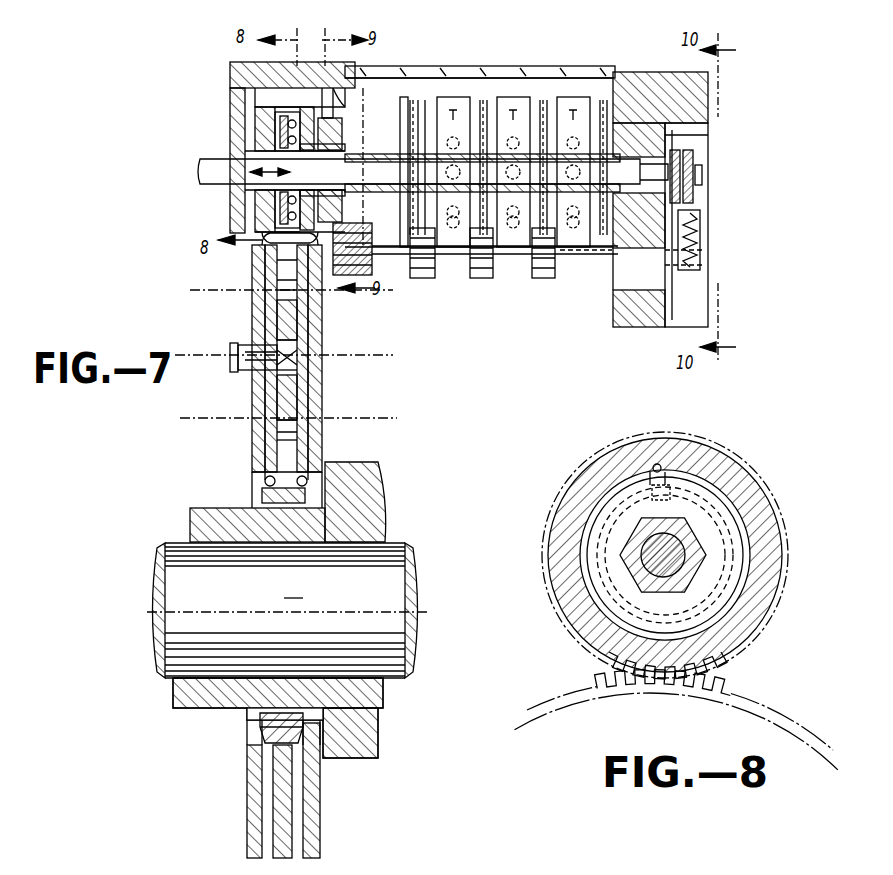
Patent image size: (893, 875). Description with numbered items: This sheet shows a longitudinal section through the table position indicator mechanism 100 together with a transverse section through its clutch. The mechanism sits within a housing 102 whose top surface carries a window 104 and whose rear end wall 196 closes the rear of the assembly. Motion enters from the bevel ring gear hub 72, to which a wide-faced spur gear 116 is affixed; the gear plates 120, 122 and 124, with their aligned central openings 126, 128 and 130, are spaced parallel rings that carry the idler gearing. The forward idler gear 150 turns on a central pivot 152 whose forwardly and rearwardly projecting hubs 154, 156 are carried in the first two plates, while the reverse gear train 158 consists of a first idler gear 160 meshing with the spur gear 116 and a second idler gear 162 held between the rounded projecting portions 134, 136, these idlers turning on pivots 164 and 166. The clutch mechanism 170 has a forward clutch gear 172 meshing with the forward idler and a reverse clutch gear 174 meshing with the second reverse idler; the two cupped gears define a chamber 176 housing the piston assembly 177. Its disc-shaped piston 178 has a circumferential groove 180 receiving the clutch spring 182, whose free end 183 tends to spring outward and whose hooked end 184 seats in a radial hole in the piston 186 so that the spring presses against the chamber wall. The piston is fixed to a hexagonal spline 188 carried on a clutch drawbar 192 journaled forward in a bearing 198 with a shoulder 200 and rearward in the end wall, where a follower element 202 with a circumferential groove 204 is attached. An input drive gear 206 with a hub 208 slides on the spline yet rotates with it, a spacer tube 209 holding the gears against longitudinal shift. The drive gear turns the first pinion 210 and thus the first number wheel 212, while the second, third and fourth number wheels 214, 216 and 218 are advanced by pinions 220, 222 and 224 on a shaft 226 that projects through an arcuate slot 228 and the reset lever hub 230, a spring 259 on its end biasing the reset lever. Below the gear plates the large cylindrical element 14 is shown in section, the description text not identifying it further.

In FIG. 7, the roller 14 is at (285, 610).
In FIG. 7, the bevel ring gear hub 72 is at (355, 462).
In FIG. 7, the table position indicator mechanism 100 is at (656, 64).
In FIG. 7, the housing 102 is at (620, 72).
In FIG. 7, the window 104 is at (434, 90).
In FIG. 7, the spur gear 116 is at (262, 496).
In FIG. 7, the gear plate 120 is at (250, 790).
In FIG. 7, the gear plate 122 is at (292, 787).
In FIG. 7, the gear plate 124 is at (318, 808).
In FIG. 7, the central opening 126 is at (250, 748).
In FIG. 7, the central opening 128 is at (262, 730).
In FIG. 7, the central opening 130 is at (330, 735).
In FIG. 7, the rounded projecting portion 134 is at (260, 270).
In FIG. 7, the rounded projecting portion 136 is at (318, 320).
In FIG. 7, the forward idler gear 150 is at (262, 414).
In FIG. 7, the central pivot 152 is at (262, 337).
In FIG. 7, the forwardly projecting hub 154 is at (234, 371).
In FIG. 7, the rearwardly projecting hub 156 is at (325, 385).
In FIG. 7, the reverse gear train 158 is at (320, 352).
In FIG. 7, the first idler gear 160 is at (322, 372).
In FIG. 7, the second idler gear 162 is at (322, 336).
In FIG. 7, the pivot 164 is at (318, 412).
In FIG. 7, the pivot 166 is at (262, 312).
In FIG. 7, the clutch mechanism 170 is at (252, 129).
In FIG. 7, the forward clutch gear 172 is at (304, 118).
In FIG. 7, the reverse clutch gear 174 is at (275, 72).
In FIG. 8, the reverse clutch gear 174 is at (742, 487).
In FIG. 7, the chamber 176 is at (297, 103).
In FIG. 8, the chamber 176 is at (658, 464).
In FIG. 7, the piston assembly 177 is at (276, 126).
In FIG. 8, the piston assembly 177 is at (728, 515).
In FIG. 7, the piston 178 is at (280, 143).
In FIG. 7, the circumferential groove 180 is at (262, 205).
In FIG. 7, the clutch spring 182 is at (280, 216).
In FIG. 8, the clutch spring 182 is at (742, 540).
In FIG. 8, the free end 183 is at (648, 480).
In FIG. 8, the hooked end 184 is at (704, 476).
In FIG. 8, the piston 186 is at (660, 503).
In FIG. 8, the spline 188 is at (690, 540).
In FIG. 7, the clutch drawbar 192 is at (202, 172).
In FIG. 8, the clutch drawbar 192 is at (680, 568).
In FIG. 7, the rear end wall 196 is at (658, 137).
In FIG. 7, the bearing 198 is at (232, 157).
In FIG. 7, the shoulder 200 is at (264, 195).
In FIG. 7, the follower element 202 is at (702, 175).
In FIG. 7, the circumferential groove 204 is at (688, 150).
In FIG. 7, the input drive gear 206 is at (335, 97).
In FIG. 7, the hub 208 is at (352, 84).
In FIG. 7, the spacer tube 209 is at (513, 157).
In FIG. 7, the first pinion 210 is at (373, 268).
In FIG. 7, the first number wheel 212 is at (397, 66).
In FIG. 7, the second number wheel 214 is at (478, 66).
In FIG. 7, the third number wheel 216 is at (506, 92).
In FIG. 7, the fourth number wheel 218 is at (563, 100).
In FIG. 7, the pinion 220 is at (430, 278).
In FIG. 7, the pinion 222 is at (480, 278).
In FIG. 7, the pinion 224 is at (540, 278).
In FIG. 7, the shaft 226 is at (572, 262).
In FIG. 7, the arcuate slot 228 is at (640, 280).
In FIG. 7, the reset lever hub 230 is at (690, 208).
In FIG. 7, the spring 259 is at (700, 230).